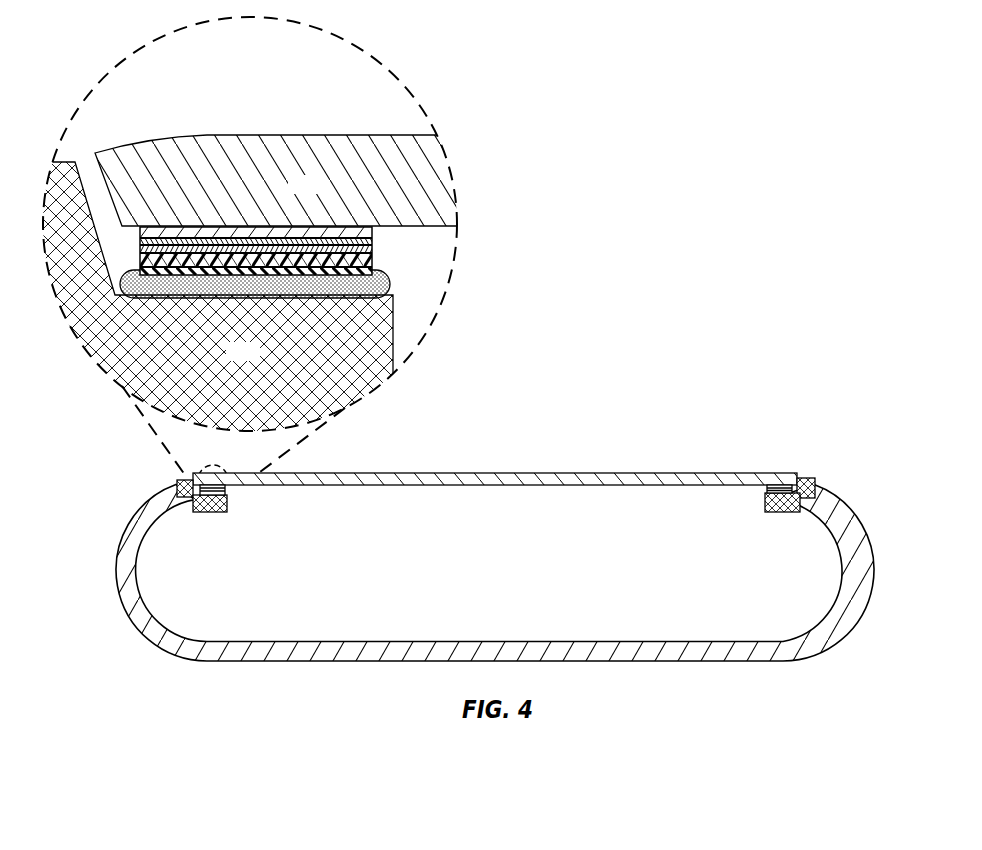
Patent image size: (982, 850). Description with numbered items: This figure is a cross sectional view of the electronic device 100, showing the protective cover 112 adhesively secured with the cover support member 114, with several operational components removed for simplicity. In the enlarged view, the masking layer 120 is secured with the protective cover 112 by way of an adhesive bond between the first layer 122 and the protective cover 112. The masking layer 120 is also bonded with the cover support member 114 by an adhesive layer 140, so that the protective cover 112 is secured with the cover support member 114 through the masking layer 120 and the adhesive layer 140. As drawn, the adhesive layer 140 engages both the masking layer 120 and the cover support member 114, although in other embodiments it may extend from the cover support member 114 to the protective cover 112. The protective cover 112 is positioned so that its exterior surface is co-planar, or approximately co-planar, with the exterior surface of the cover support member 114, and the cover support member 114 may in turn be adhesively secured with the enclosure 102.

The electronic device 100 is at (727, 385).
The enclosure 102 is at (843, 497).
The protective cover 112 is at (318, 193).
The cover support member 114 is at (255, 360).
The masking layer 120 is at (327, 251).
The first layer 122 is at (372, 242).
The adhesive layer 140 is at (388, 280).